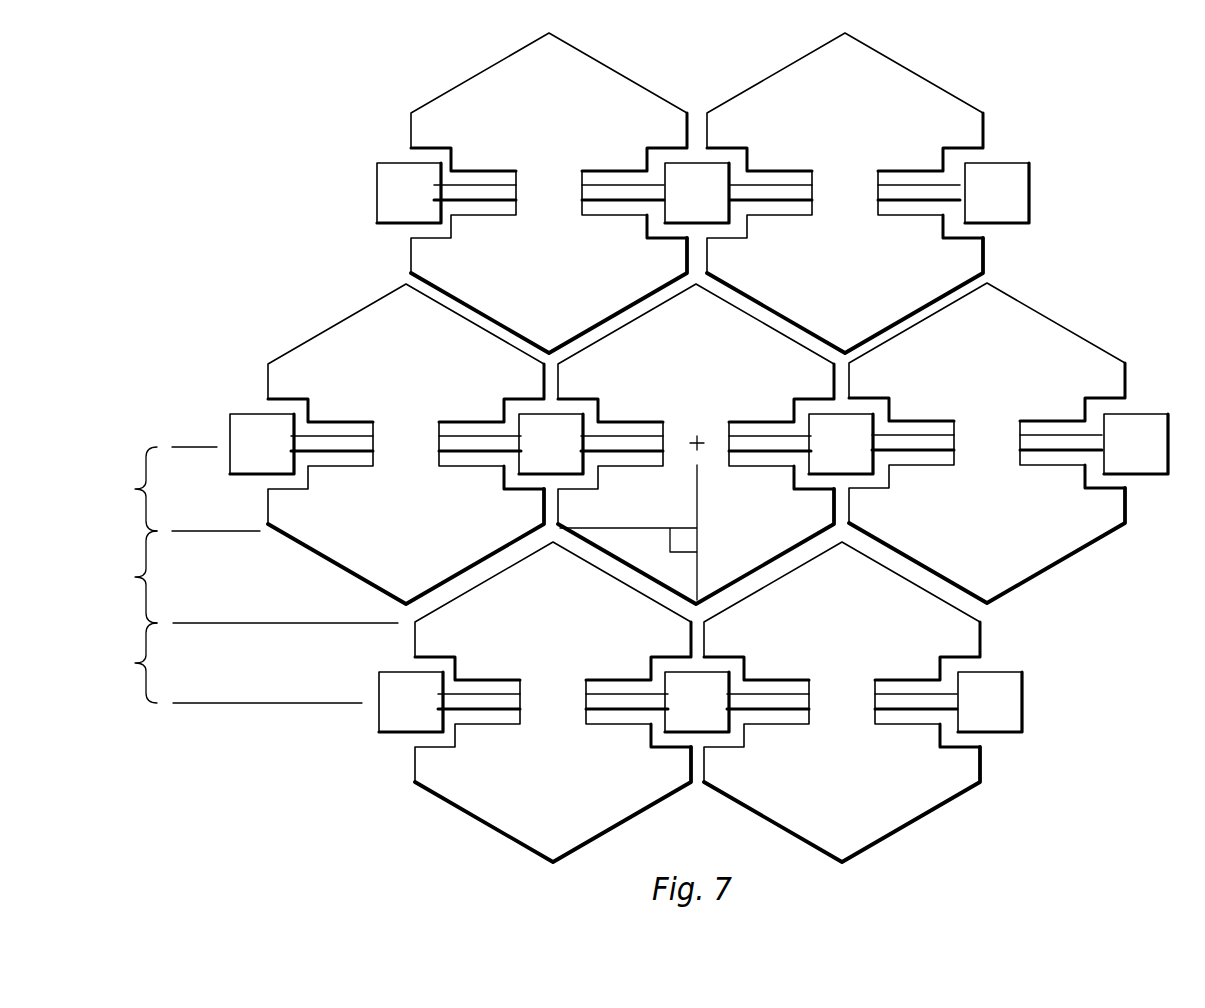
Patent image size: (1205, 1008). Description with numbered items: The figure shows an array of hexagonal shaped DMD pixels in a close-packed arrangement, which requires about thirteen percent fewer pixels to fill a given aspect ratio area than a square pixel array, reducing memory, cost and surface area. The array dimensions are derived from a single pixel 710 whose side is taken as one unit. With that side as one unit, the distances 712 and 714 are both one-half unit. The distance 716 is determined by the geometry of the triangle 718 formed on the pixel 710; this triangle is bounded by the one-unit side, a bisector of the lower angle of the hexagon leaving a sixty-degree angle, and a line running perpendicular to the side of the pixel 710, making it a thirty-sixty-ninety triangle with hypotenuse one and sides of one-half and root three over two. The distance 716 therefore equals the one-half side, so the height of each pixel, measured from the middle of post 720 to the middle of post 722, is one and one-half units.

The pixel 710 is at (723, 398).
The distance 712 is at (133, 663).
The distance 714 is at (133, 489).
The distance 716 is at (133, 577).
The triangle 718 is at (697, 562).
The post 720 is at (383, 715).
The post 722 is at (243, 421).